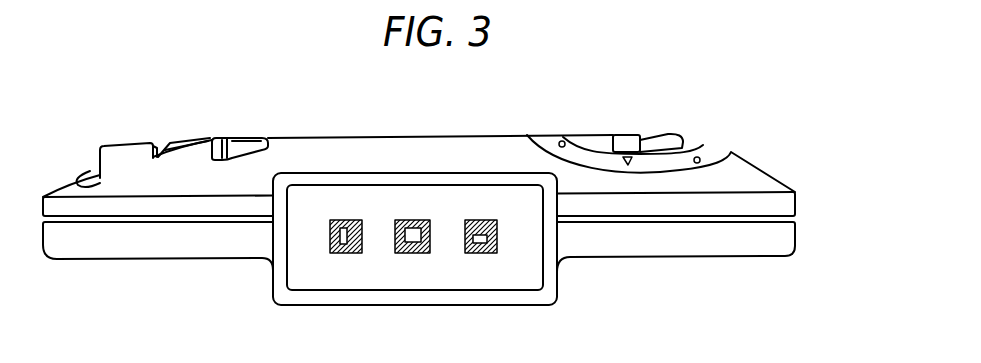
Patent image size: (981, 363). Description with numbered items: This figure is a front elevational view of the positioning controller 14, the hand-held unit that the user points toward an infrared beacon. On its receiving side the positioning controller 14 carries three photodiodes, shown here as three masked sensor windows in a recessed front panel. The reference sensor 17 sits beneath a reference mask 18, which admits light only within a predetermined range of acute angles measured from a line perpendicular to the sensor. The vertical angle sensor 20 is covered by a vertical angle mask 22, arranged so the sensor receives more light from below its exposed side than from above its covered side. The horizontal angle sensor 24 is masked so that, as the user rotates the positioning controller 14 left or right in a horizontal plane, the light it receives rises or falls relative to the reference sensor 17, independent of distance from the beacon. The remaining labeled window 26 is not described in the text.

The positioning controller 14 is at (748, 157).
The reference sensor 17 is at (430, 220).
The reference mask 18 is at (398, 220).
The vertical angle sensor 20 is at (478, 250).
The vertical angle mask 22 is at (490, 220).
The horizontal angle sensor 24 is at (343, 244).
The connector 26 is at (333, 220).